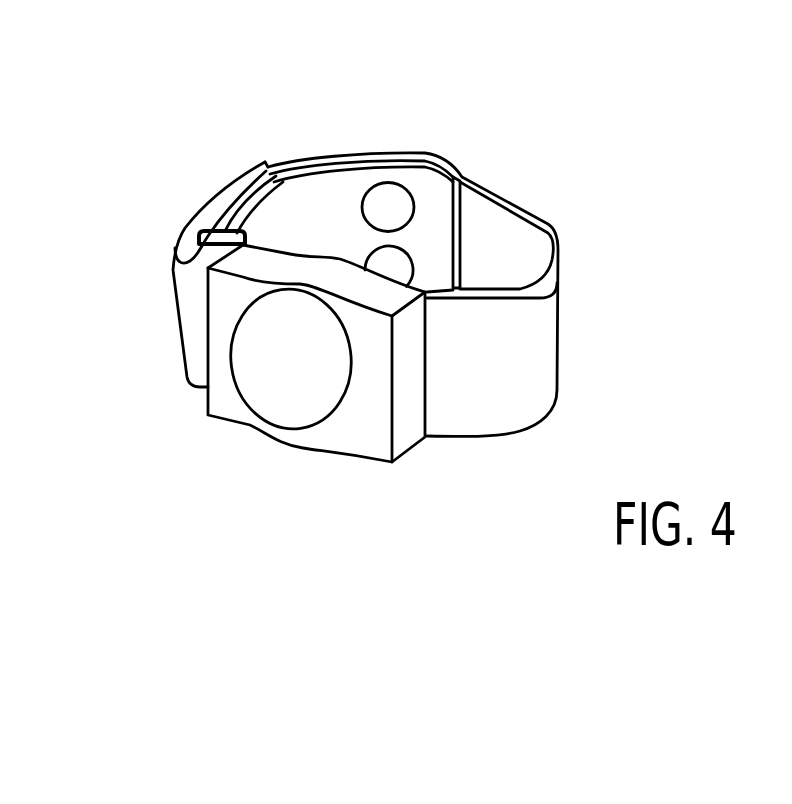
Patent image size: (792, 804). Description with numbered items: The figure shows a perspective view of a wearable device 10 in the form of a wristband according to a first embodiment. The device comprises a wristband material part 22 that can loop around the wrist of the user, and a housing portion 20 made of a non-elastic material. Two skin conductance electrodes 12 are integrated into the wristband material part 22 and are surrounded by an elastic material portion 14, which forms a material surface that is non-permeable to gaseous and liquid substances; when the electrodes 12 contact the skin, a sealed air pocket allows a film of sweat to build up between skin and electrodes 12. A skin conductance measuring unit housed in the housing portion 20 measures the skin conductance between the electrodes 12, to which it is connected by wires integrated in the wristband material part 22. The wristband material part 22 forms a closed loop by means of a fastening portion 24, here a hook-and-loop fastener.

The wearable device 10 is at (597, 150).
The skin conductance electrodes 12 is at (378, 203).
The elastic material portion 14 is at (380, 238).
The housing portion 20 is at (365, 423).
The wristband material part 22 is at (525, 340).
The fastening portion 24 is at (138, 243).